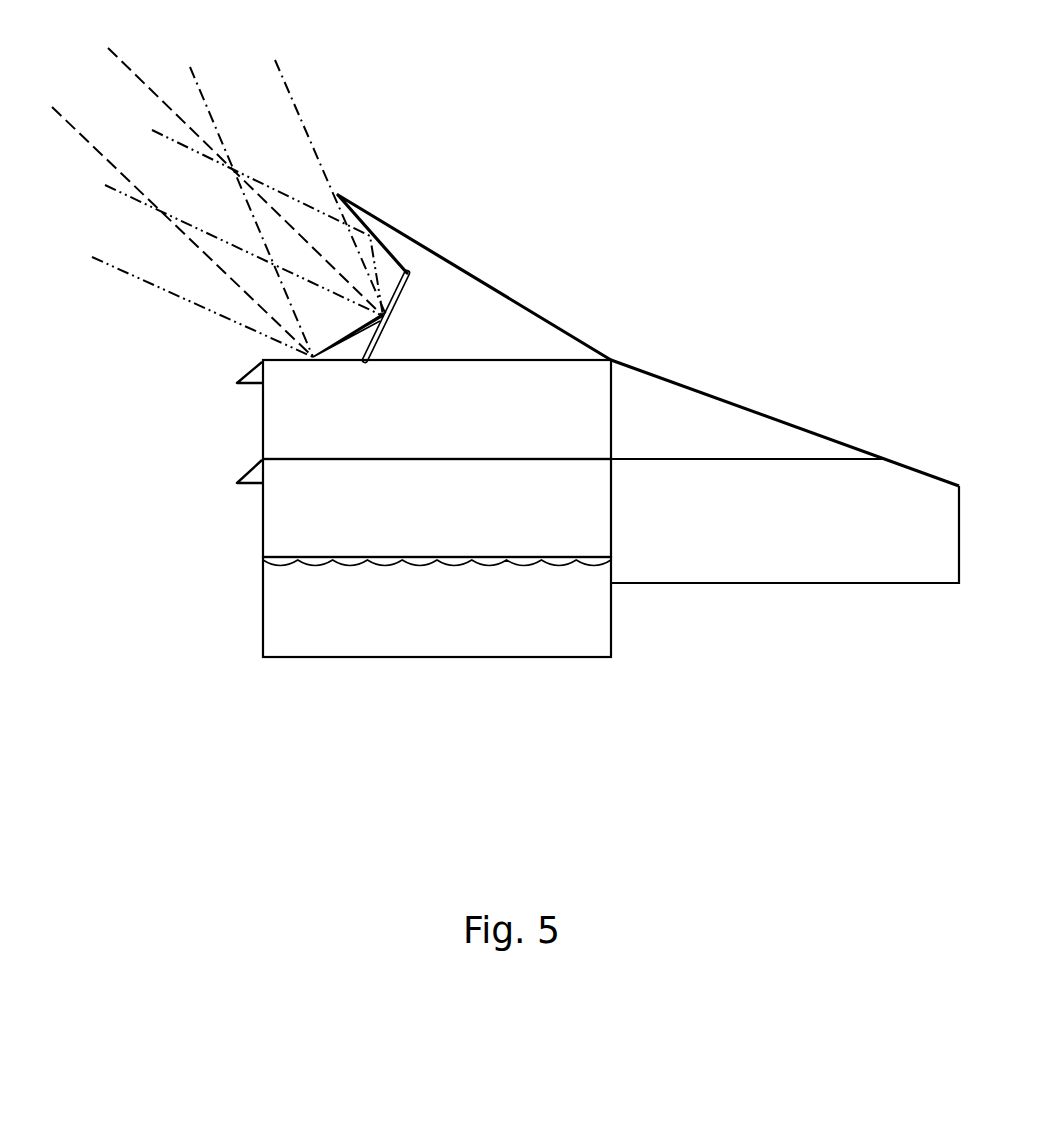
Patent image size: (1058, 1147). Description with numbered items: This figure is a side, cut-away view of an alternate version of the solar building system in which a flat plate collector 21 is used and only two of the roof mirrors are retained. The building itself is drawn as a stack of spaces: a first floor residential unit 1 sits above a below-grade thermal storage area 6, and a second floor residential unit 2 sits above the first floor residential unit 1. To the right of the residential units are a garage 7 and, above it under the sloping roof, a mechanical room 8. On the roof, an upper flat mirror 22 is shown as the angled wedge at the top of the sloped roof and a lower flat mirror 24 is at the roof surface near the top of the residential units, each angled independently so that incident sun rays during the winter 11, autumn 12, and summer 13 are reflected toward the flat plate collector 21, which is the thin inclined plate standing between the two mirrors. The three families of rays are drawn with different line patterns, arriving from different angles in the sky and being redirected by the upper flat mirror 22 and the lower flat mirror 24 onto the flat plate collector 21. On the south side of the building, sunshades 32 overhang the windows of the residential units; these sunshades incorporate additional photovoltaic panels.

The first floor residential unit 1 is at (342, 483).
The second floor residential unit 2 is at (342, 383).
The below-grade thermal storage area 6 is at (342, 582).
The garage 7 is at (680, 500).
The mechanical room 8 is at (638, 412).
The winter rays 11 is at (163, 137).
The autumn rays 12 is at (128, 63).
The summer rays 13 is at (210, 115).
The flat plate collector 21 is at (408, 272).
The upper flat mirror 22 is at (368, 232).
The lower flat mirror 24 is at (312, 360).
The sunshades 32 is at (247, 373).